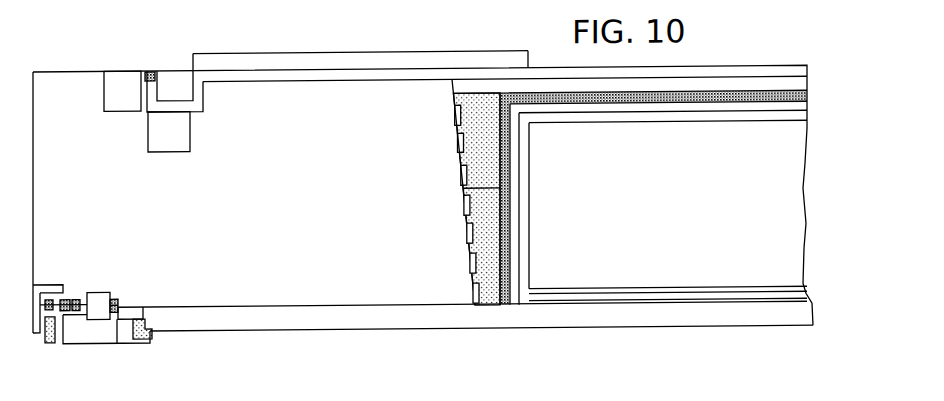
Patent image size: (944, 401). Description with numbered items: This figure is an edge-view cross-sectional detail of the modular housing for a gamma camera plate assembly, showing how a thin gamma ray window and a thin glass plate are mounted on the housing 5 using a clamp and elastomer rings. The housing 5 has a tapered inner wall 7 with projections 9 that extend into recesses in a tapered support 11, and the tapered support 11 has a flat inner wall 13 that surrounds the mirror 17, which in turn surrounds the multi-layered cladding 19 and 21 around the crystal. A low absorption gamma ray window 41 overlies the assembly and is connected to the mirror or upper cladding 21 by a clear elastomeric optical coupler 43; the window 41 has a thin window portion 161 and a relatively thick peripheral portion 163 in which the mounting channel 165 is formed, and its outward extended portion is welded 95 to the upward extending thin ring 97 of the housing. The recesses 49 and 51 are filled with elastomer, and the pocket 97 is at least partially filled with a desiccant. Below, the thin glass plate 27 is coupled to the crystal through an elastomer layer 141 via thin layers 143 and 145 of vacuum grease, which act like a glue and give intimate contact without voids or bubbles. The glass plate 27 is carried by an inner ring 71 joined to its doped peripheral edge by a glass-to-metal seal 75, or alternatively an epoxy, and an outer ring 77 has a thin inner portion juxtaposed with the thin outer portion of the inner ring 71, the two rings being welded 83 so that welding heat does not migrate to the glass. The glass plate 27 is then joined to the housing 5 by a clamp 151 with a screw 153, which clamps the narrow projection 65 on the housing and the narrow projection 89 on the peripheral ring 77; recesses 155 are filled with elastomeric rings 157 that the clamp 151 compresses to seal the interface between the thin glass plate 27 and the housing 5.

The housing 5 is at (33, 174).
The tapered inner wall 7 is at (468, 248).
The projections 9 is at (460, 174).
The tapered support 11 is at (455, 136).
The flat inner wall 13 is at (497, 192).
The mirror 17 is at (503, 190).
The cladding layer 19 is at (527, 251).
The upper cladding layer 21 is at (515, 211).
The thin glass plate 27 is at (584, 334).
The gamma ray window 41 is at (784, 72).
The clear elastomeric optical coupler 43 is at (713, 83).
The recess 49 is at (122, 80).
The recess 51 is at (178, 82).
The narrow projection on housing 65 is at (43, 305).
The inner ring 71 is at (142, 345).
The glass-to-metal seal 75 is at (156, 334).
The outer ring 77 is at (88, 345).
The weld 83 is at (115, 306).
The narrow projection on peripheral ring 89 is at (45, 306).
The weld 95 is at (152, 73).
The upward extending thin ring / pocket 97 is at (179, 137).
The elastomer layer 141 is at (767, 298).
The thin layer of vacuum grease 143 is at (666, 293).
The thin layer of vacuum grease 145 is at (744, 312).
The clamp 151 is at (39, 331).
The screw 153 is at (50, 345).
The recesses 155 is at (77, 300).
The elastomeric rings 157 is at (66, 300).
The thin window portion 161 is at (548, 71).
The thick peripheral portion 163 is at (381, 55).
The mounting channel 165 is at (204, 99).